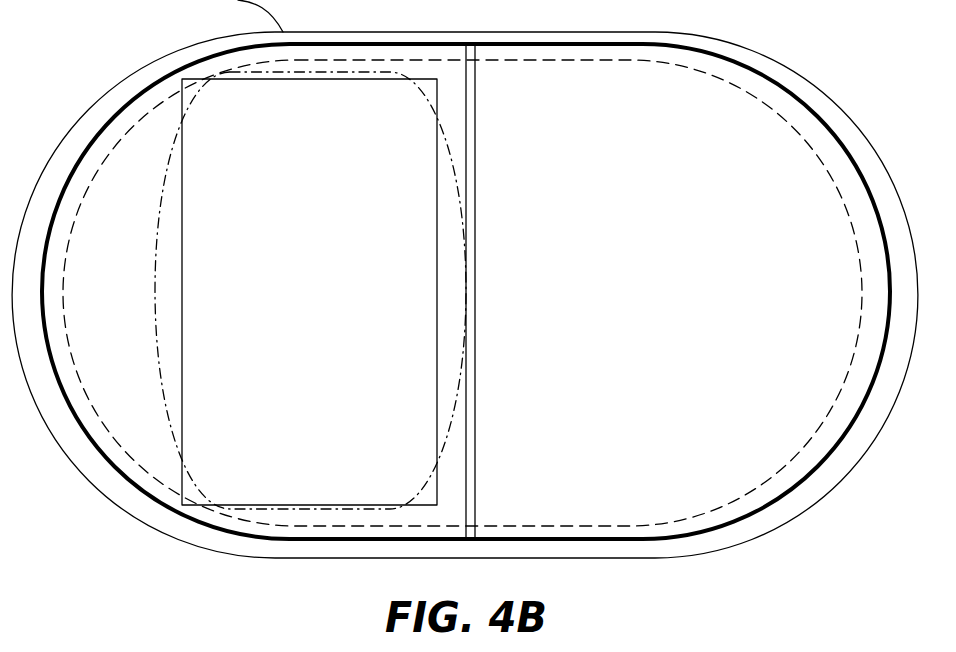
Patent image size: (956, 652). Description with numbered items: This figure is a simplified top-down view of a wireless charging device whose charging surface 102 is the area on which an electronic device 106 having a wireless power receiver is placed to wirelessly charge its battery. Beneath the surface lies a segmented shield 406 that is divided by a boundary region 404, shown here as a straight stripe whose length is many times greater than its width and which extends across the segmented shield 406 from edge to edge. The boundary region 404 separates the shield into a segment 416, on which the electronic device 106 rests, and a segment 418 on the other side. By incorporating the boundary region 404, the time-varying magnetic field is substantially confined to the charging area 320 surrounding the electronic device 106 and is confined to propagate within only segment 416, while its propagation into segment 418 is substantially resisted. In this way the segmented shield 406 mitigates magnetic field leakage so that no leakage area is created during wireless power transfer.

The charging surface 102 is at (117, 140).
The electronic device 106 is at (309, 292).
The charging area 320 is at (439, 444).
The boundary region 404 is at (470, 133).
The segmented shield 406 is at (182, 61).
The segment 416 is at (103, 286).
The segment 418 is at (651, 286).